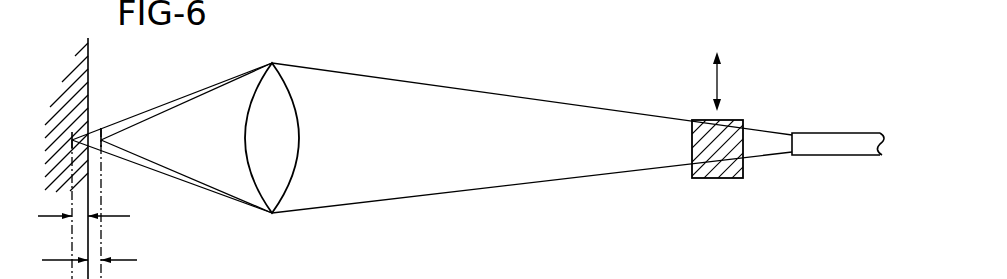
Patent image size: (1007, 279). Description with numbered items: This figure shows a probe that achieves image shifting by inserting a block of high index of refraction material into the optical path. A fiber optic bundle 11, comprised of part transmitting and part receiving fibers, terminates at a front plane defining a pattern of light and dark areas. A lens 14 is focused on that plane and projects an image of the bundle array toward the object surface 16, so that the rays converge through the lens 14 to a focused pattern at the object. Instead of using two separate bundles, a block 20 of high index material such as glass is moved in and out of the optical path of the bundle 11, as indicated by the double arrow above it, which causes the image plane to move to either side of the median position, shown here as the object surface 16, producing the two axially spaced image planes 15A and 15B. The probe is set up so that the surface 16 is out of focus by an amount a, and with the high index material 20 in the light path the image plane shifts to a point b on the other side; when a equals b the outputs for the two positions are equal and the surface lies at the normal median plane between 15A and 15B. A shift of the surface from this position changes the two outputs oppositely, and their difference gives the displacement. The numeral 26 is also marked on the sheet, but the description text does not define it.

The object surface 16 is at (88, 57).
The first image plane 15A is at (70, 139).
The second image plane 15B is at (101, 140).
The lens 14 is at (278, 93).
The control means 26 is at (563, 0).
The block of high index of refraction material 20 is at (718, 170).
The fiber optic bundle 11 is at (832, 136).
The out-of-focus displacement a is at (93, 215).
The image plane shift b is at (98, 261).